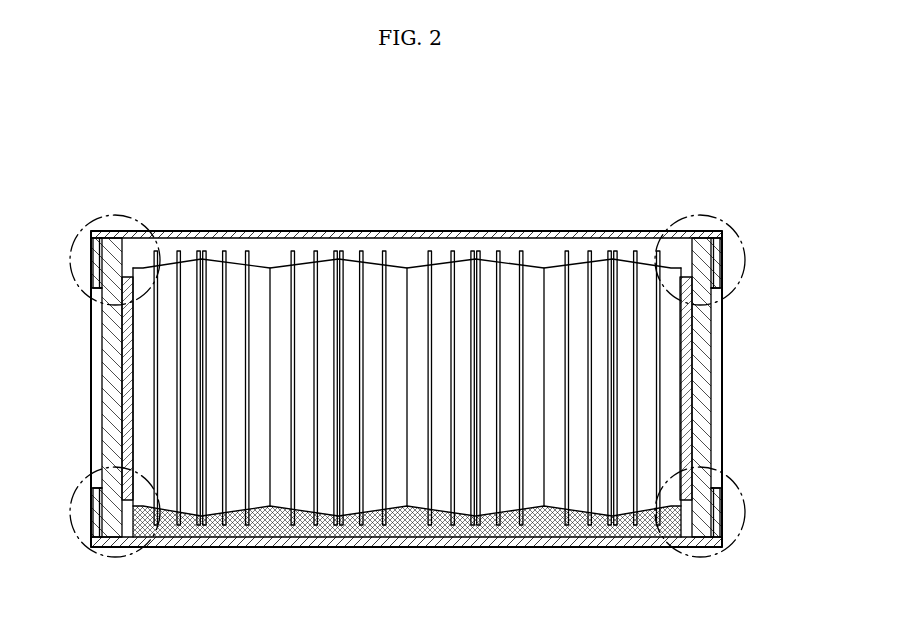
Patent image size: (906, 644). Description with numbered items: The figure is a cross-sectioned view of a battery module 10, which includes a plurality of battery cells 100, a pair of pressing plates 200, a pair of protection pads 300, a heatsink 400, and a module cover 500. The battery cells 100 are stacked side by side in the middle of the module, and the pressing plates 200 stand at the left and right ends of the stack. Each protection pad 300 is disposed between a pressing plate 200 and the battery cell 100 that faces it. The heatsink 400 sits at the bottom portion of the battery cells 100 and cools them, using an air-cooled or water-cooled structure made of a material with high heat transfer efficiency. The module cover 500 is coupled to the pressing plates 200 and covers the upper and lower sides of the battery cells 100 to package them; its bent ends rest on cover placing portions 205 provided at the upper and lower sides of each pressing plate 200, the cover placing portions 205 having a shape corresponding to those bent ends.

The battery module 10 is at (189, 160).
The battery cell 100 is at (397, 267).
The pressing plate 200 is at (97, 405).
The cover placing portion 205 is at (713, 262).
The protection pad 300 is at (130, 347).
The heatsink 400 is at (573, 527).
The module cover 500 is at (515, 231).